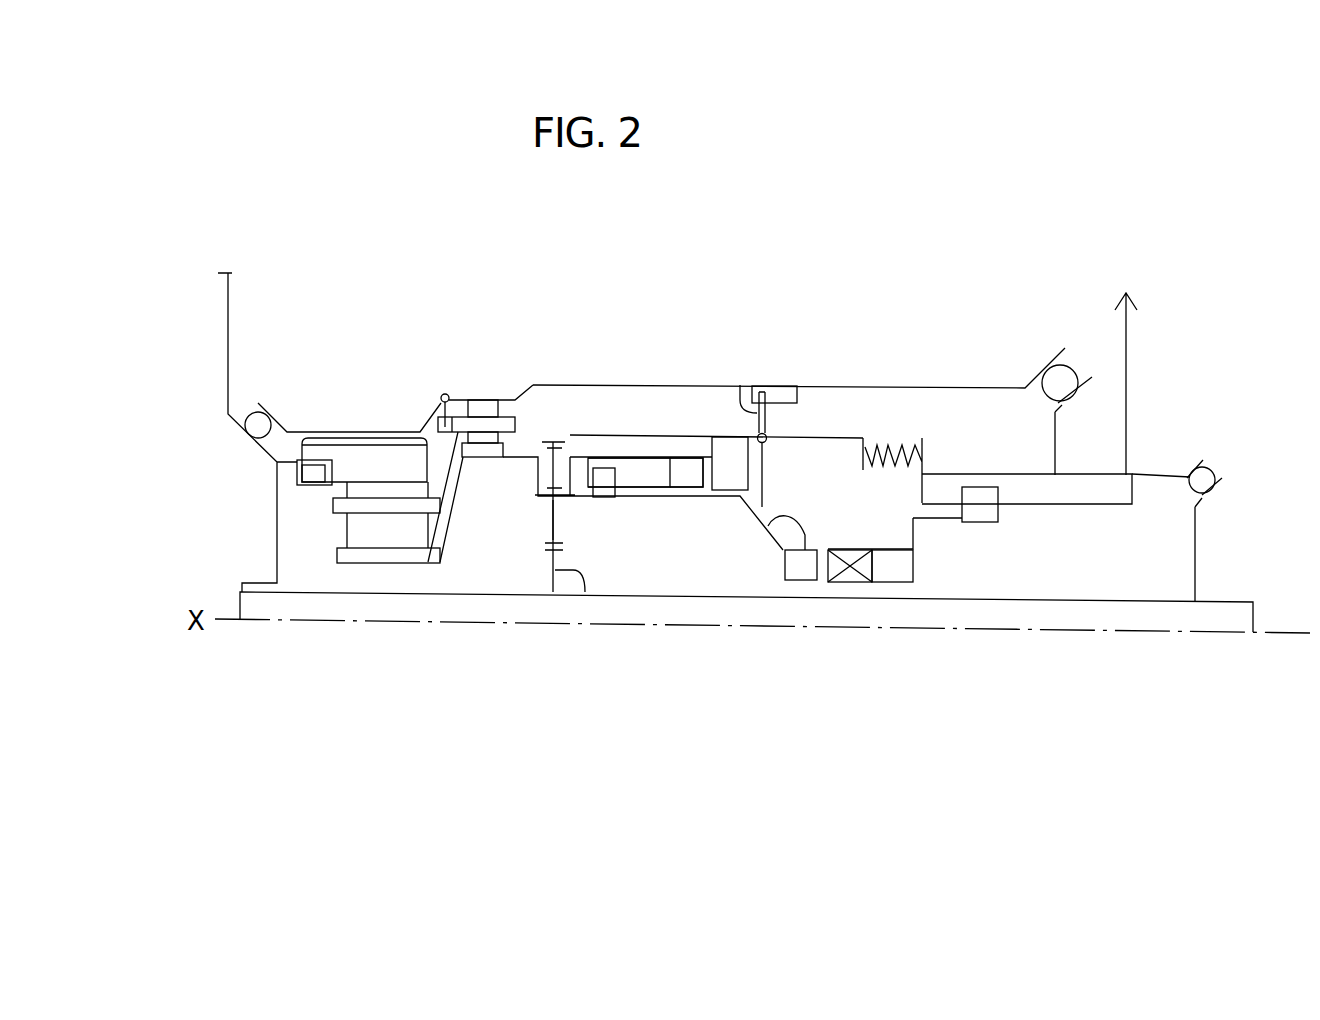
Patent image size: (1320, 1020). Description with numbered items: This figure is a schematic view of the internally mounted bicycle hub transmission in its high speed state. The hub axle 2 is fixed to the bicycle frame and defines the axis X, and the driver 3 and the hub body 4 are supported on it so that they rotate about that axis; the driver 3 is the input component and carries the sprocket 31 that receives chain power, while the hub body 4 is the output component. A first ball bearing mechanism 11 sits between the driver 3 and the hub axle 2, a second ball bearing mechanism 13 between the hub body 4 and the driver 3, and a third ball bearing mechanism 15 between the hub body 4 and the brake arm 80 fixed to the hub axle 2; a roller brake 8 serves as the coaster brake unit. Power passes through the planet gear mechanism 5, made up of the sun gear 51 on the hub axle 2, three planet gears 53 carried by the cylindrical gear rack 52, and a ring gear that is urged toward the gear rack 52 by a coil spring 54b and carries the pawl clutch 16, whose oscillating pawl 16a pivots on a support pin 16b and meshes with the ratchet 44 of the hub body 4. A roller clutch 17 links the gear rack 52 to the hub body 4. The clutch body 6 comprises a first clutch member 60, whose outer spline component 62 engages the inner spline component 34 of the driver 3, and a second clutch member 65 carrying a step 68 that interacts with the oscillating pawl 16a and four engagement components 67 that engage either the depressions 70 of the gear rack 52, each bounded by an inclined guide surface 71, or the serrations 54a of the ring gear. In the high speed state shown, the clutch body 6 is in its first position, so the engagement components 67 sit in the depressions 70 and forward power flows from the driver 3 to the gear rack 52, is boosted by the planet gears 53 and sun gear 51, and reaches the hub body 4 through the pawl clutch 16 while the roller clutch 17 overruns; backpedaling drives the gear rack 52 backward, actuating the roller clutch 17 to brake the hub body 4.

The hub axle 2 is at (1220, 600).
The driver 3 is at (1153, 475).
The hub body 4 is at (942, 388).
The planet gear mechanism 5 is at (575, 537).
The clutch body 6 is at (913, 598).
The roller brake 8 is at (370, 452).
The first ball bearing mechanism 11 is at (1225, 455).
The second ball bearing mechanism 13 is at (1078, 353).
The third ball bearing mechanism 15 is at (246, 392).
The pawl clutch 16 is at (802, 418).
The oscillating pawl 16a is at (738, 384).
The support pin 16b is at (768, 434).
The roller clutch 17 is at (480, 400).
The sprocket 31 is at (1135, 308).
The inner spline component 34 is at (1067, 505).
The ratchet 44 is at (783, 387).
The sun gear 51 is at (558, 572).
The gear rack 52 is at (448, 532).
The planet gears 53 is at (543, 518).
The serrations 54a is at (722, 473).
The coil spring 54b is at (893, 445).
The first clutch member 60 is at (945, 522).
The outer spline component 62 is at (985, 492).
The second clutch member 65 is at (637, 460).
The engagement components 67 is at (603, 472).
The step 68 is at (805, 550).
The depressions 70 is at (640, 472).
The inclined guide surface 71 is at (675, 472).
The brake arm 80 is at (227, 357).